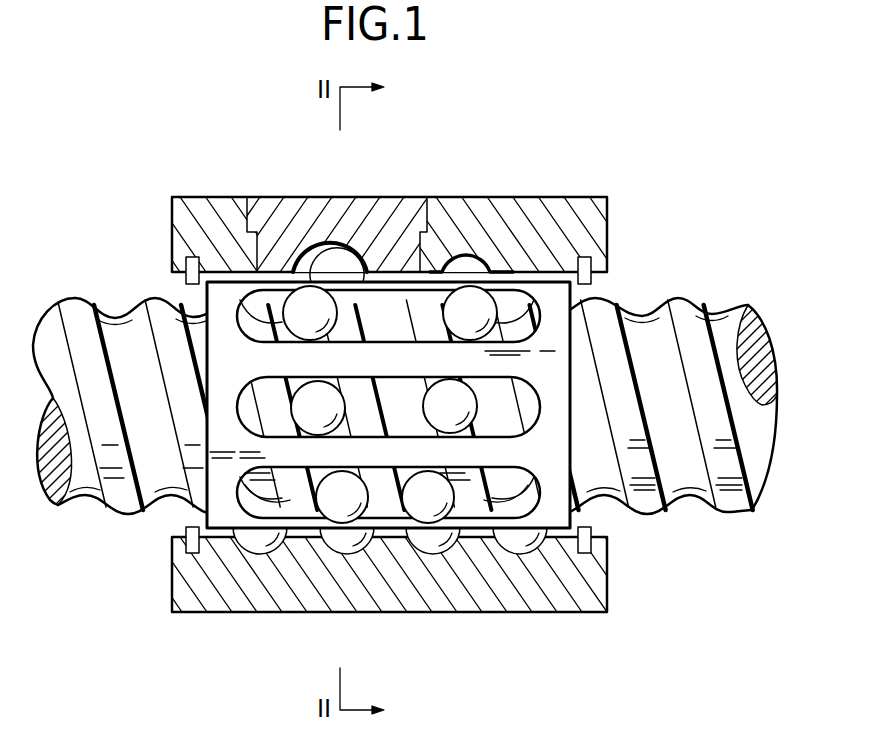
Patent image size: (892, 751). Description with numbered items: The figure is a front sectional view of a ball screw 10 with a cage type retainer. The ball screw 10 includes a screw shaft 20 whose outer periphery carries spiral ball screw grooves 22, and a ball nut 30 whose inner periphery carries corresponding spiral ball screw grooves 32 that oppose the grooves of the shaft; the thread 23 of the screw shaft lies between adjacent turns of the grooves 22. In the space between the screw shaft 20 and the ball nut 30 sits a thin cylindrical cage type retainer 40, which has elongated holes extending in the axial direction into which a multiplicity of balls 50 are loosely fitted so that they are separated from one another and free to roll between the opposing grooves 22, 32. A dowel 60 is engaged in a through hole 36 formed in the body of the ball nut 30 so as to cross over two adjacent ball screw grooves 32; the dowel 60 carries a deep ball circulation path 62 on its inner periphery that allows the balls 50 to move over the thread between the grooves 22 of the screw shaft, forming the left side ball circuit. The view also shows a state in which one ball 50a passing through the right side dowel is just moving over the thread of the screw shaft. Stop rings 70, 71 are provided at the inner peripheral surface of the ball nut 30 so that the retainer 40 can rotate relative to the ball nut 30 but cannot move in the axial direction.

The ball screw 10 is at (585, 178).
The screw shaft 20 is at (739, 278).
The ball screw grooves 22 is at (648, 315).
The thread land of screw shaft 23 is at (653, 506).
The ball nut 30 is at (442, 632).
The ball screw grooves 32 is at (513, 540).
The through hole 36 is at (262, 240).
The cage type retainer 40 is at (222, 350).
The balls 50 is at (310, 513).
The ball 50a is at (438, 410).
The dowel 60 is at (393, 212).
The ball circulation path 62 is at (335, 257).
The stop ring 70 is at (185, 538).
The stop ring 71 is at (592, 538).